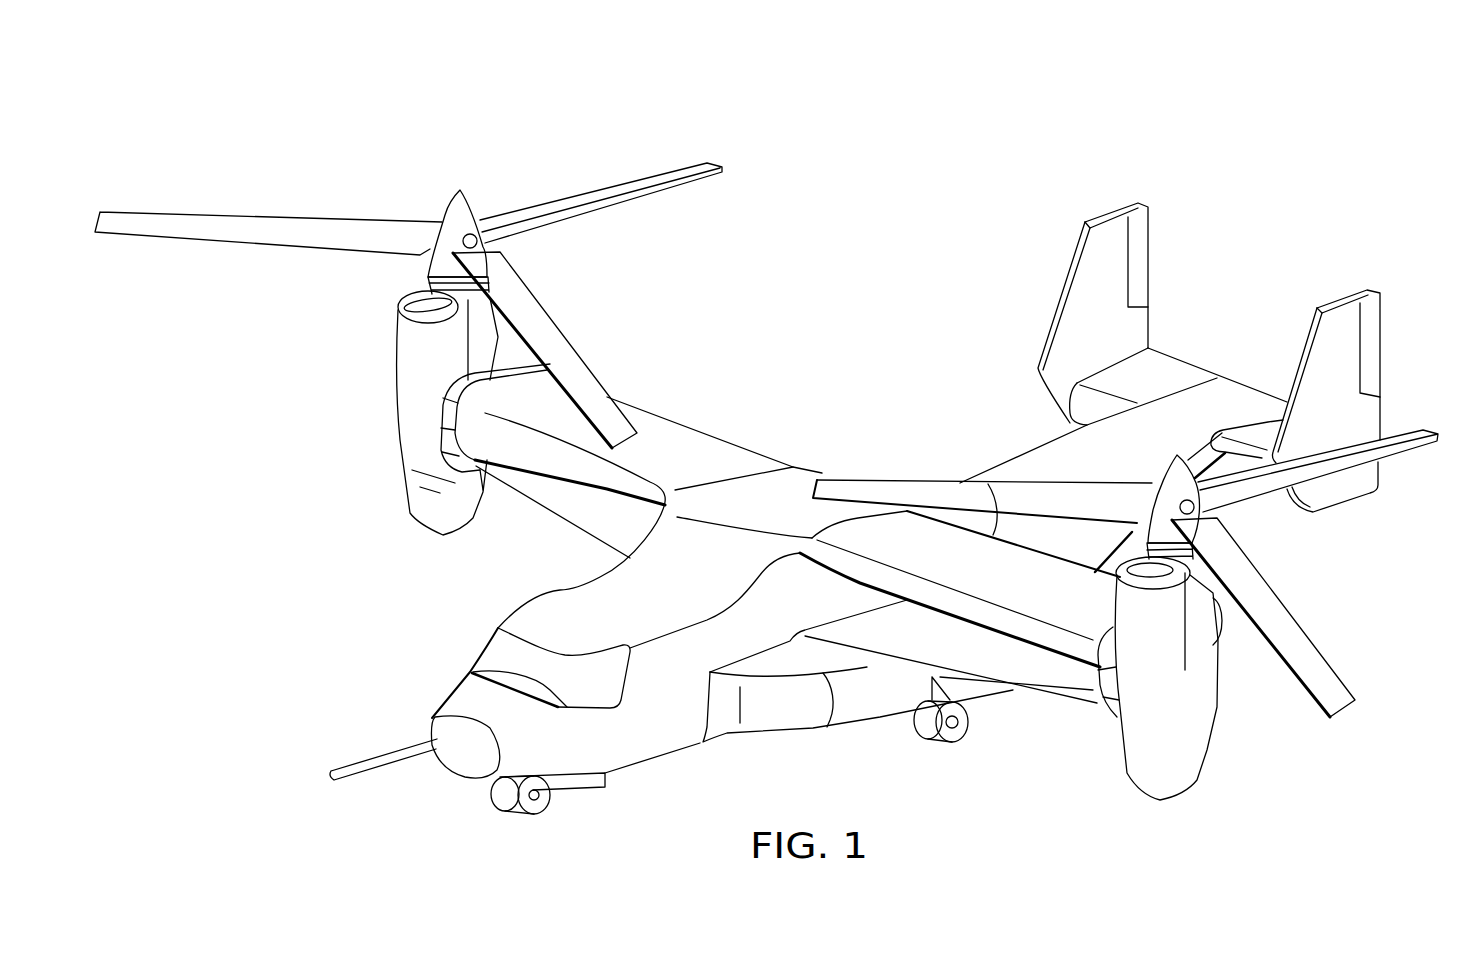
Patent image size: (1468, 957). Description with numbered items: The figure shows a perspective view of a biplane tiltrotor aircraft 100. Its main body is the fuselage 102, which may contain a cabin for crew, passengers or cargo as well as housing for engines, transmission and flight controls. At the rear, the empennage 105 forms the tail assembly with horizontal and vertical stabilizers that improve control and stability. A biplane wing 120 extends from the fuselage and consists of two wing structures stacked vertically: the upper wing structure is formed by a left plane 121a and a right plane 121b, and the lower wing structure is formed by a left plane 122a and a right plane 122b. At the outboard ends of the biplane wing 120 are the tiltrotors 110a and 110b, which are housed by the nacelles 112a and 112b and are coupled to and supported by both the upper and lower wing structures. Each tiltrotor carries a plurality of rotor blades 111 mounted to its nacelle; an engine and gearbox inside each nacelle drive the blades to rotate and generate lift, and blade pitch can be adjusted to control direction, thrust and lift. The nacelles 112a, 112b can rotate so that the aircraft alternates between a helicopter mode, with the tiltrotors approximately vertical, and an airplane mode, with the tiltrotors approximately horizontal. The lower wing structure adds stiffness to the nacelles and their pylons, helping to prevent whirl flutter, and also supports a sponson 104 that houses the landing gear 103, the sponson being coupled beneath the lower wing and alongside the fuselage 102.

The biplane tiltrotor aircraft 100 is at (654, 112).
The fuselage 102 is at (660, 760).
The landing gear 103 is at (517, 812).
The sponson 104 is at (827, 677).
The empennage 105 is at (1185, 362).
The tiltrotor 110a is at (1158, 476).
The tiltrotor 110b is at (447, 208).
The rotor blades 111 is at (606, 212).
The nacelle 112a is at (1217, 714).
The nacelle 112b is at (397, 413).
The biplane wing 120 is at (811, 446).
The left plane of upper wing structure 121a is at (990, 537).
The right plane of upper wing structure 121b is at (730, 408).
The left plane of lower wing structure 122a is at (1056, 703).
The right plane of lower wing structure 122b is at (533, 507).